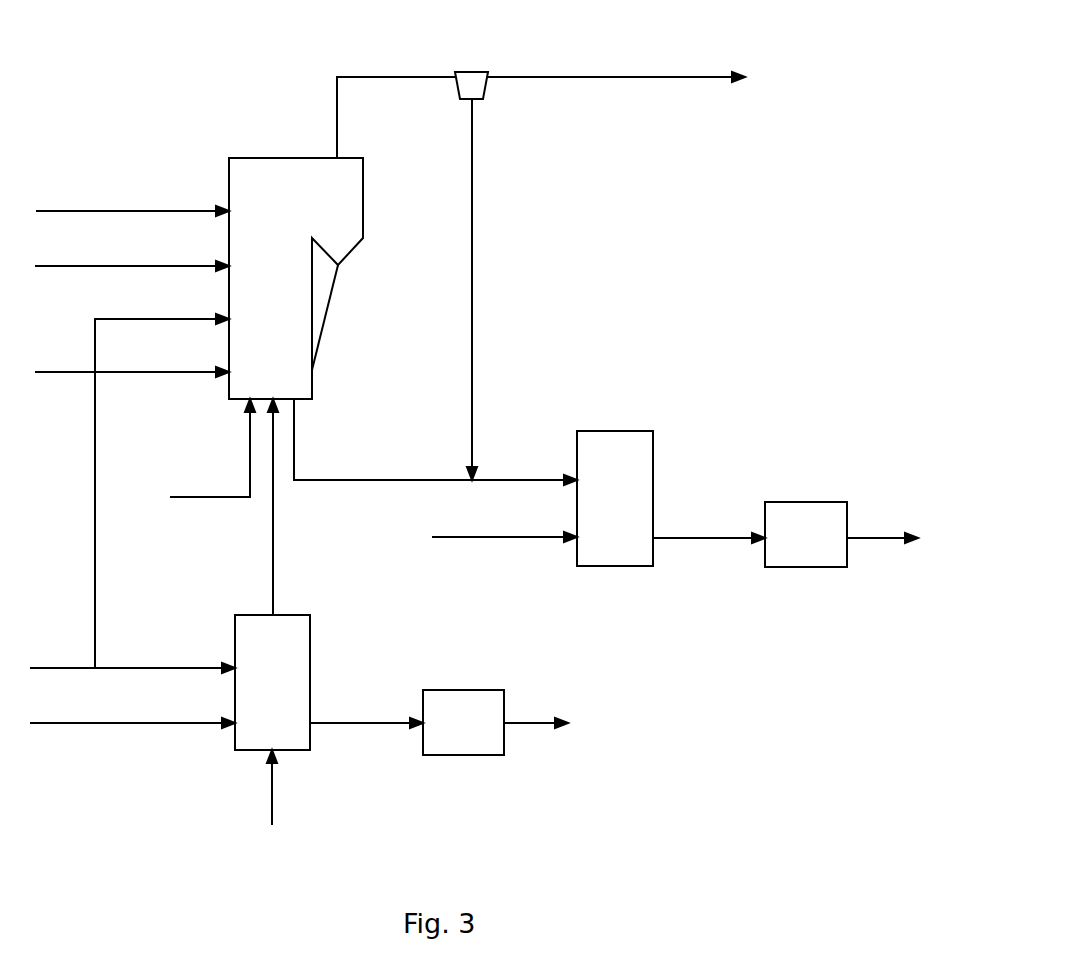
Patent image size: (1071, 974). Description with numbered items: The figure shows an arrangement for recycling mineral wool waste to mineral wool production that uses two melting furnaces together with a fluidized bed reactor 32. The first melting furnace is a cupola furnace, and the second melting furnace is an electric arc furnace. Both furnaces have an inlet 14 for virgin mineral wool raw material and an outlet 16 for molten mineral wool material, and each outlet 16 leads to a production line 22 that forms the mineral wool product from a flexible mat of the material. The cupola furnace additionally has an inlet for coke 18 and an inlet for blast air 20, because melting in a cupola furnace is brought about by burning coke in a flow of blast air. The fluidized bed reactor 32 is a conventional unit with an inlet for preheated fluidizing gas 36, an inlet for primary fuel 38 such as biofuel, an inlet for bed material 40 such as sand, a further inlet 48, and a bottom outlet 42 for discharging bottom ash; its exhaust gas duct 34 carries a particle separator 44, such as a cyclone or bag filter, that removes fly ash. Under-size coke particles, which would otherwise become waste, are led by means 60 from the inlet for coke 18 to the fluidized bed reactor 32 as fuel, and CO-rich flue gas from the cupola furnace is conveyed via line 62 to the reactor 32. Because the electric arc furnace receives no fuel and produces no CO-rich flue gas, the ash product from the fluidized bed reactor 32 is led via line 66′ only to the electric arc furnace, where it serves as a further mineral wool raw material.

The inlet for virgin mineral wool raw material 14 is at (488, 538).
The outlet for molten mineral wool material 16 is at (727, 538).
The inlet for coke 18 is at (197, 668).
The inlet for blast air 20 is at (272, 795).
The production line 22 is at (670, 628).
The fluidized bed reactor 32 is at (296, 278).
The exhaust gas duct 34 is at (397, 77).
The inlet for preheated fluidizing gas 36 is at (250, 420).
The inlet for primary fuel 38 is at (218, 371).
The inlet for bed material 40 is at (218, 265).
The bottom outlet 42 is at (294, 425).
The particle separator 44 is at (485, 90).
The inlet stream 48 is at (205, 211).
The means for leading coke particles 60 is at (95, 512).
The line 62 is at (273, 542).
The line 66′ is at (512, 480).